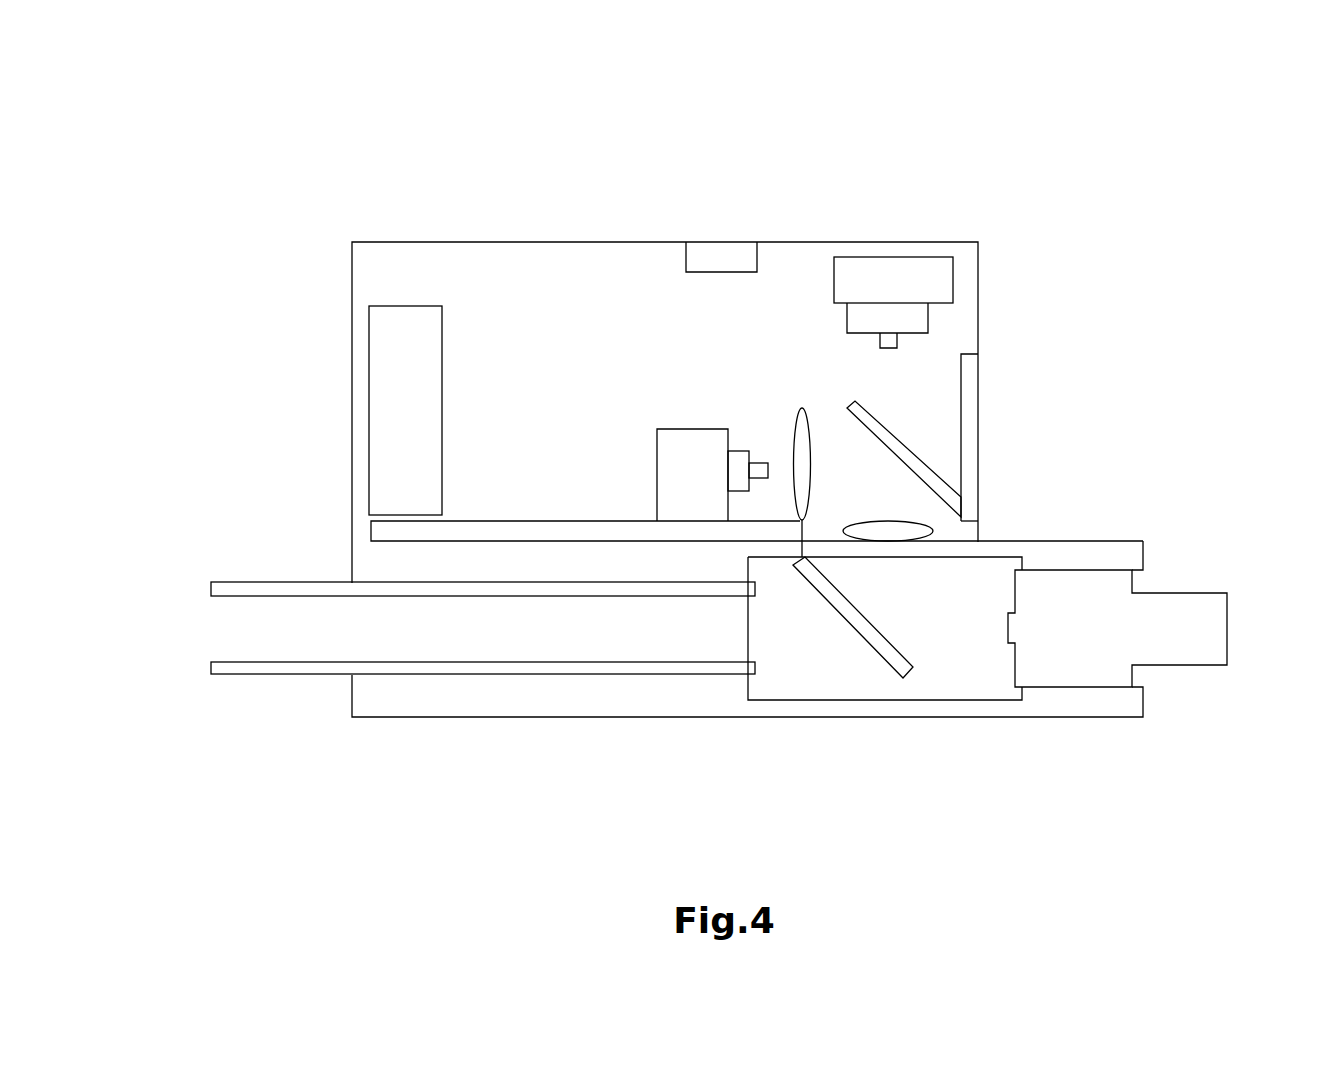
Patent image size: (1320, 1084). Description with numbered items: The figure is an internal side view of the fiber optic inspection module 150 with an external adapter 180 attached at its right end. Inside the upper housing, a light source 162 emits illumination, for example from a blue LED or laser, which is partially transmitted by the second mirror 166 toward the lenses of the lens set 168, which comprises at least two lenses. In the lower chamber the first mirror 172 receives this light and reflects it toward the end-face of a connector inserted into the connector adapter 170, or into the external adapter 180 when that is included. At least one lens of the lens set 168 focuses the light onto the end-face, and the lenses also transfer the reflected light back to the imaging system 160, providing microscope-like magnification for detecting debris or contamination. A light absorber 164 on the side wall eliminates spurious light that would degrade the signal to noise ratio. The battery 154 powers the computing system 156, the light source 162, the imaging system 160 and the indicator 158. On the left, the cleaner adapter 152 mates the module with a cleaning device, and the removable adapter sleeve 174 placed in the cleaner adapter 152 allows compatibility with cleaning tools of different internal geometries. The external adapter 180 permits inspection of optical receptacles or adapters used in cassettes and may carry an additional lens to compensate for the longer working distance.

The fiber optic inspection module 150 is at (881, 158).
The cleaner adapter 152 is at (484, 675).
The battery 154 is at (398, 395).
The computing system 156 is at (523, 510).
The indicator 158 is at (725, 223).
The imaging system 160 is at (740, 440).
The light source 162 is at (928, 317).
The light absorber 164 is at (983, 427).
The second mirror 166 is at (930, 473).
The lens set 168 is at (810, 468).
The connector adapter 170 is at (1073, 718).
The first mirror 172 is at (847, 640).
The adapter sleeve 174 is at (213, 667).
The external adapter 180 is at (1107, 638).